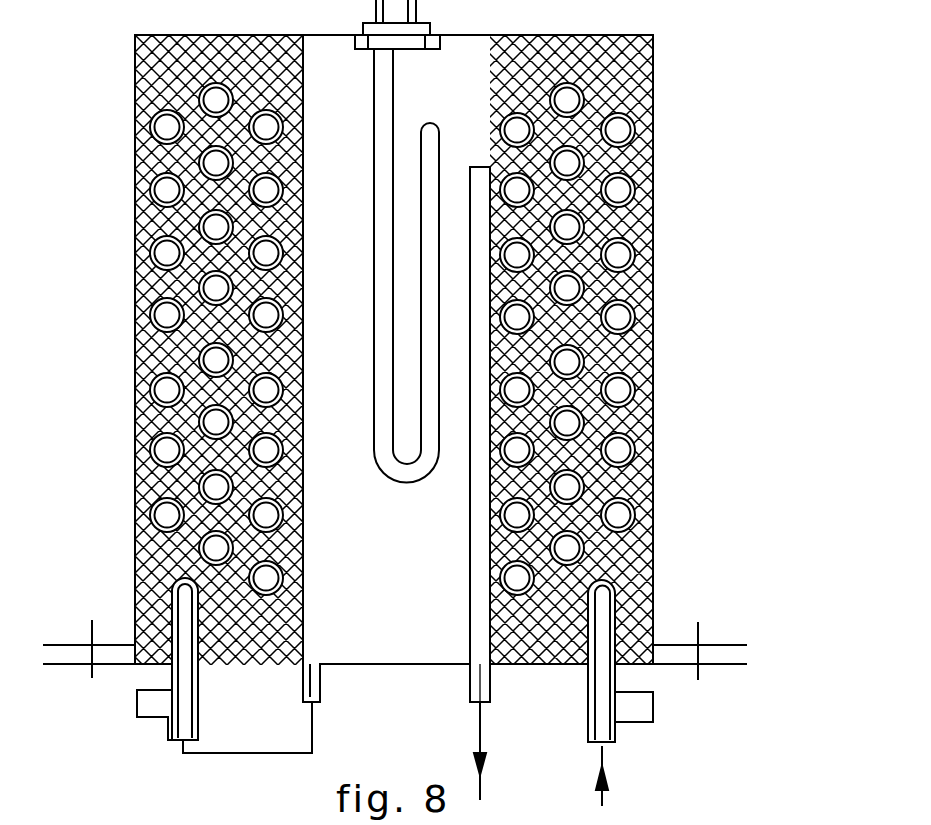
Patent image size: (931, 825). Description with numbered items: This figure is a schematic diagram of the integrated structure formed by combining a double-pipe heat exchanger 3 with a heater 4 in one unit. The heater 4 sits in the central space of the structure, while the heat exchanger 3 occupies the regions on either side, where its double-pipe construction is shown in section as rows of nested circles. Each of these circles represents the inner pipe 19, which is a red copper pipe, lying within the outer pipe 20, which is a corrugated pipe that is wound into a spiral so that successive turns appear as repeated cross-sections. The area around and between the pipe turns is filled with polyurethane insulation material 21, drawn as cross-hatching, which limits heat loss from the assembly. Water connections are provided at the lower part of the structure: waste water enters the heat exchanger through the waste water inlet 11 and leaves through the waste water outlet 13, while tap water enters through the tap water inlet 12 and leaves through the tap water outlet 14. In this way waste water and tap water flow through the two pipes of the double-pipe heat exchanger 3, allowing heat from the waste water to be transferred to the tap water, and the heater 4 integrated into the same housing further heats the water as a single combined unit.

The heat exchanger 3 is at (655, 450).
The heater 4 is at (450, 88).
The waste water inlet of heat exchanger 11 is at (182, 700).
The tap water inlet of heat exchanger 12 is at (603, 732).
The waste water outlet of heat exchanger 13 is at (627, 710).
The tap water outlet of heat exchanger 14 is at (153, 703).
The inner pipe of red copper pipe 19 is at (533, 252).
The outer pipe of corrugated pipe winded into spiral 20 is at (580, 347).
The polyurethane insulation material 21 is at (603, 93).